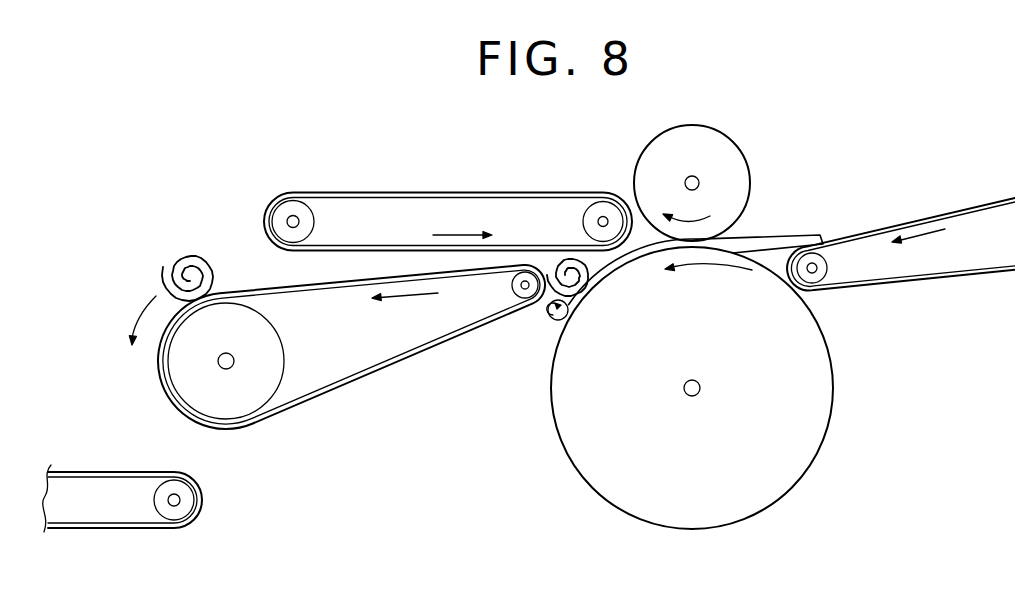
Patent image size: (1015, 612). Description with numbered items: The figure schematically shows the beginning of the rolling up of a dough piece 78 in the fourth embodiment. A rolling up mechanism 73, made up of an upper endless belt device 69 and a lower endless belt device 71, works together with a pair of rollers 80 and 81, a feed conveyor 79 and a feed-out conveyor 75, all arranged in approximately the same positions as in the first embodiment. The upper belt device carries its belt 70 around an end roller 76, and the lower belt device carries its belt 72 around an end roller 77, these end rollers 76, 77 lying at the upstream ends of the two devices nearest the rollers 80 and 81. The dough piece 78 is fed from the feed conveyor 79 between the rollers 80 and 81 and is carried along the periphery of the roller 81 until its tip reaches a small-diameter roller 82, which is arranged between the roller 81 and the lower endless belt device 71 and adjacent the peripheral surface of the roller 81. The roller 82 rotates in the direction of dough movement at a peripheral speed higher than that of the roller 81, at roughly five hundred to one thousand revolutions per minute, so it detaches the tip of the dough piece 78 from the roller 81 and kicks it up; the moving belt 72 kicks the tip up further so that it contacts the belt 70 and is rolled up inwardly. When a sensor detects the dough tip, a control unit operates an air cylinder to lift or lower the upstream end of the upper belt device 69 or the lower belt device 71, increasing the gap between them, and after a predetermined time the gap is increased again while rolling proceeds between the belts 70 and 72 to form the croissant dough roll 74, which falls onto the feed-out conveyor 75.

The upper endless belt device 69 is at (399, 191).
The belt 70 is at (497, 196).
The lower endless belt device 71 is at (378, 393).
The belt 72 is at (425, 351).
The rolling up mechanism 73 is at (208, 218).
The croissant dough roll 74 is at (128, 341).
The feed-out conveyor 75 is at (131, 536).
The upper conveyor end roller 76 is at (602, 217).
The lower conveyor end roller 77 is at (525, 289).
The dough piece 78 is at (778, 243).
The feed conveyor 79 is at (952, 204).
The roller 80 is at (731, 138).
The roller 81 is at (827, 426).
The roller 82 is at (553, 320).